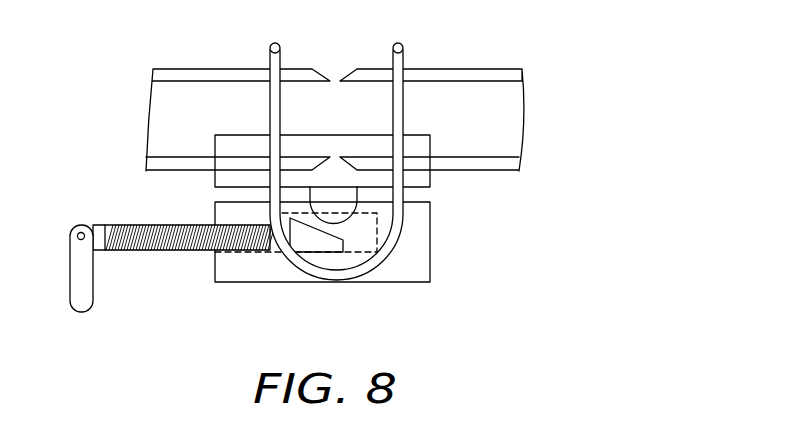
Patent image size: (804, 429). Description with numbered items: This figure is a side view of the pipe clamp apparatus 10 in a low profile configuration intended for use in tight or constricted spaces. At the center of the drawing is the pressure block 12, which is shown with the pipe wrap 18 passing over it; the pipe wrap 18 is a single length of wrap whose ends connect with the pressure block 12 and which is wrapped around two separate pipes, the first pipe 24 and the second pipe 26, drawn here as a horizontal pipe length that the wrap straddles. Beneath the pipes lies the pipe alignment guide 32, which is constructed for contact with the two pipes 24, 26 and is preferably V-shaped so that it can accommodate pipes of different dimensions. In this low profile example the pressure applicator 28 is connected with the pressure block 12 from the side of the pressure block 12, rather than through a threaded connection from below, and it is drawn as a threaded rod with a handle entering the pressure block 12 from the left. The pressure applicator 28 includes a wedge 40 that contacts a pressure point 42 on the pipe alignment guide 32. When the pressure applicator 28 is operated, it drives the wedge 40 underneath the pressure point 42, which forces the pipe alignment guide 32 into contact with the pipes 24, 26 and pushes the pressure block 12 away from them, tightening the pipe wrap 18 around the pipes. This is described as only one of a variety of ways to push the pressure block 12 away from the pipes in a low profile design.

The pipe clamp apparatus 10 is at (572, 42).
The pressure block 12 is at (432, 253).
The pipe wrap 18 is at (398, 117).
The first pipe 24 is at (210, 68).
The second pipe 26 is at (432, 69).
The pressure applicator 28 is at (150, 250).
The pipe alignment guide 32 is at (215, 178).
The wedge 40 is at (310, 240).
The pressure point 42 is at (355, 222).